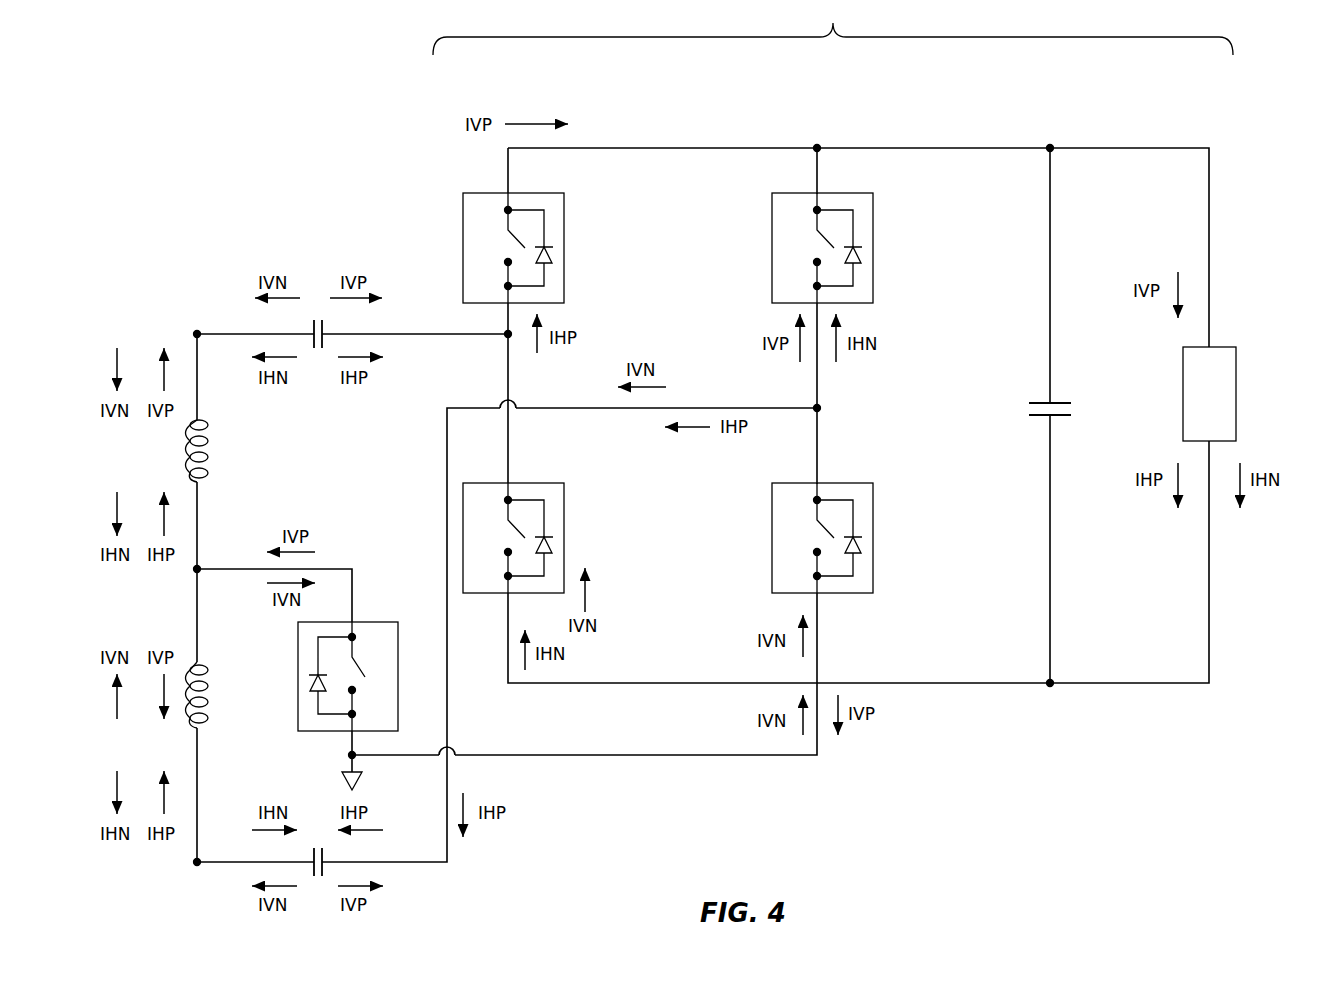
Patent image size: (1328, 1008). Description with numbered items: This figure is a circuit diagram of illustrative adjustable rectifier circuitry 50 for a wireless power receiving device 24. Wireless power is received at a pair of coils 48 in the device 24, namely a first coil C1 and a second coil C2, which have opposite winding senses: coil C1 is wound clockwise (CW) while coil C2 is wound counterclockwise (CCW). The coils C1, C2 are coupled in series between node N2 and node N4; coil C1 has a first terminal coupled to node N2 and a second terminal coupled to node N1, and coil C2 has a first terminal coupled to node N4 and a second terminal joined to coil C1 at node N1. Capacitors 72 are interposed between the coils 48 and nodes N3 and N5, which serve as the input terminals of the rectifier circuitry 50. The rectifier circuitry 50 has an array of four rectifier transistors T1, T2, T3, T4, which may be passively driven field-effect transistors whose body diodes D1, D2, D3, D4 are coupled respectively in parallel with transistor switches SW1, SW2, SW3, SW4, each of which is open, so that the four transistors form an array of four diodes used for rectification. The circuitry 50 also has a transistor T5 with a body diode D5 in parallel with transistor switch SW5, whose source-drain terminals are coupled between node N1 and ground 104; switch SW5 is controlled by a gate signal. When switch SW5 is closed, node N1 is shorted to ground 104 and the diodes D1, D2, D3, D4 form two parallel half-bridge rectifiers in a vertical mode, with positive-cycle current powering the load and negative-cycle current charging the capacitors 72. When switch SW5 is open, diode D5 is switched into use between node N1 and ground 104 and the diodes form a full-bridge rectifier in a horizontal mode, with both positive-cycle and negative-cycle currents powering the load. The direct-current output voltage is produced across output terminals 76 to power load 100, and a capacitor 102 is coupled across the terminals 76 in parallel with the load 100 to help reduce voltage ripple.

The adjustable rectifier circuitry 50 is at (833, 30).
The output terminals 76 is at (1050, 145).
The capacitors 72 is at (334, 328).
The coils 48 is at (246, 574).
The first coil C1 is at (209, 442).
The second coil C2 is at (209, 698).
The clockwise winding sense CW is at (209, 468).
The counterclockwise winding sense CCW is at (240, 672).
The node N1 is at (211, 557).
The node N2 is at (194, 323).
The node N3 is at (494, 345).
The node N4 is at (183, 864).
The node N5 is at (834, 409).
The rectifier transistor T1 is at (564, 206).
The rectifier transistor T2 is at (873, 206).
The rectifier transistor T3 is at (564, 496).
The rectifier transistor T4 is at (873, 496).
The transistor T5 is at (375, 622).
The body diode D1 is at (553, 250).
The body diode D2 is at (862, 250).
The body diode D3 is at (553, 540).
The body diode D4 is at (862, 540).
The body diode D5 is at (310, 688).
The transistor switch SW1 is at (500, 247).
The transistor switch SW2 is at (809, 247).
The transistor switch SW3 is at (500, 537).
The transistor switch SW4 is at (809, 537).
The transistor switch SW5 is at (378, 660).
The ground 104 is at (362, 780).
The capacitor 102 is at (1078, 389).
The load 100 is at (1236, 387).
The wireless power receiving device 24 is at (604, 826).